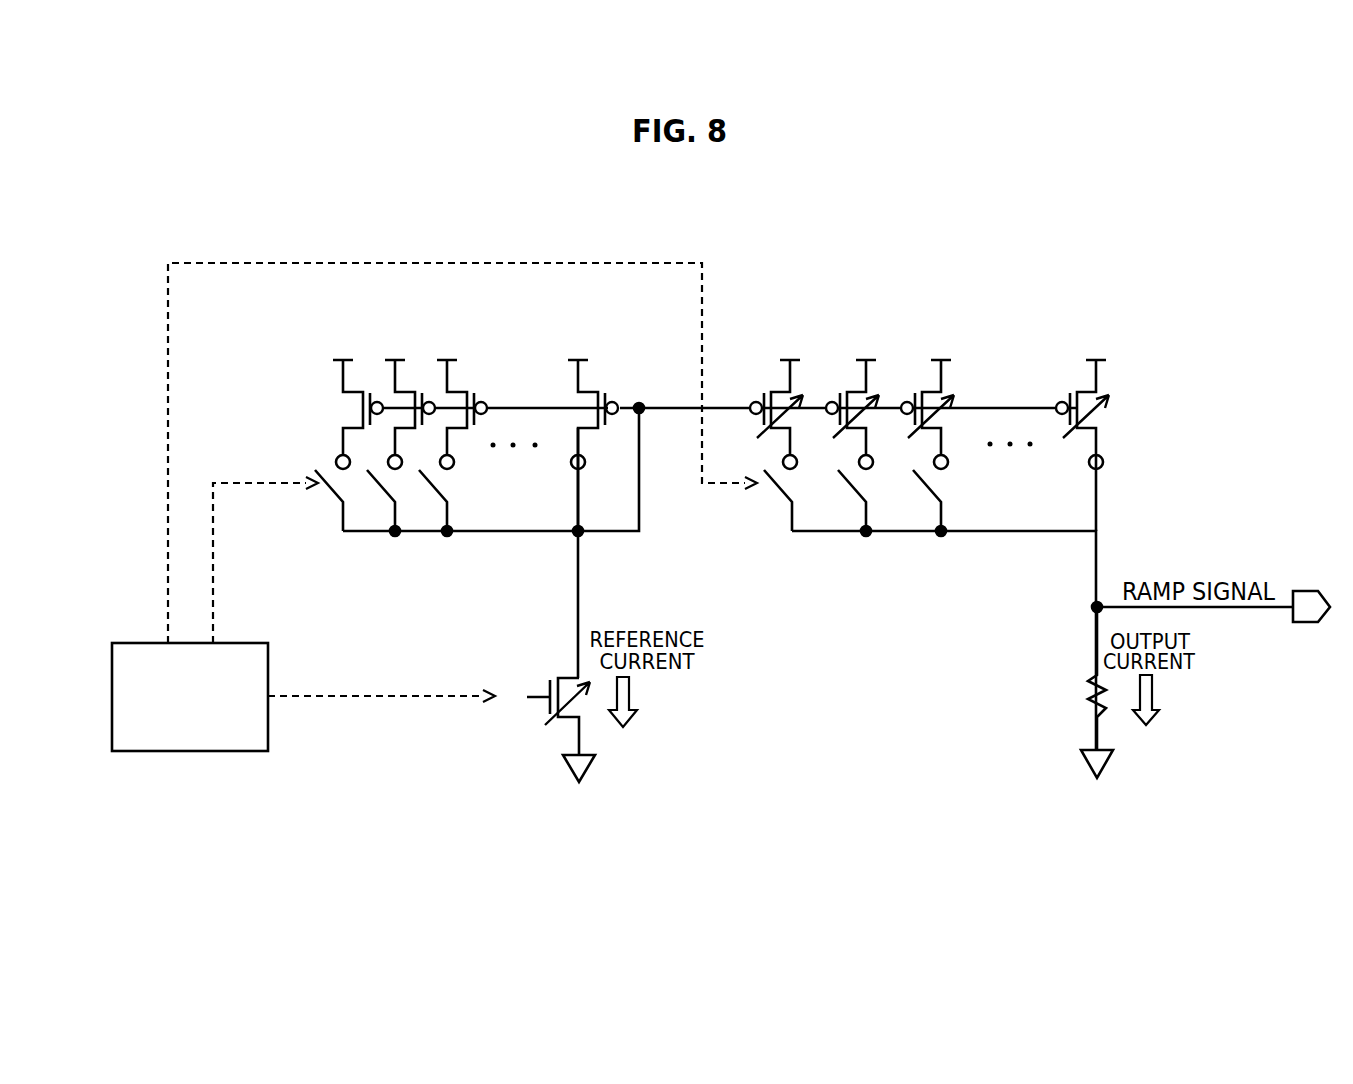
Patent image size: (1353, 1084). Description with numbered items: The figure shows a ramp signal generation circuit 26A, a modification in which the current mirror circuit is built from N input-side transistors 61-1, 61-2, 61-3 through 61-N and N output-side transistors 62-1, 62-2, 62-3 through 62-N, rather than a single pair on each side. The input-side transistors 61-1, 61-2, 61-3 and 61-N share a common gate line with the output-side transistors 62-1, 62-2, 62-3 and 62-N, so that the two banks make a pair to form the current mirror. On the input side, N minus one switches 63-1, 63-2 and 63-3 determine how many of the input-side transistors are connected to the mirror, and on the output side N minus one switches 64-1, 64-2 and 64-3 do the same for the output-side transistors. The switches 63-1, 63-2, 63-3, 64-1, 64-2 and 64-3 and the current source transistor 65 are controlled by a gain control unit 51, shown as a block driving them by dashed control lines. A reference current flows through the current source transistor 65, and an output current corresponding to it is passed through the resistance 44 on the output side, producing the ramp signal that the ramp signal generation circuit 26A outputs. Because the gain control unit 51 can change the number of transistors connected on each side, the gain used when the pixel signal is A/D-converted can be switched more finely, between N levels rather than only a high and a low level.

The ramp signal generation circuit 26A is at (1040, 254).
The resistance 44 is at (1090, 688).
The gain control unit 51 is at (190, 751).
The input-side transistor 61-1 is at (353, 390).
The input-side transistor 61-2 is at (405, 390).
The input-side transistor 61-3 is at (457, 390).
The input-side transistor 61-N is at (588, 390).
The output-side transistor 62-1 is at (780, 390).
The output-side transistor 62-2 is at (857, 390).
The output-side transistor 62-3 is at (930, 390).
The output-side transistor 62-N is at (1085, 390).
The switch 63-1 is at (328, 488).
The switch 63-2 is at (376, 487).
The switch 63-3 is at (430, 487).
The switch 64-1 is at (778, 488).
The switch 64-2 is at (847, 487).
The switch 64-3 is at (923, 487).
The current source transistor 65 is at (566, 677).